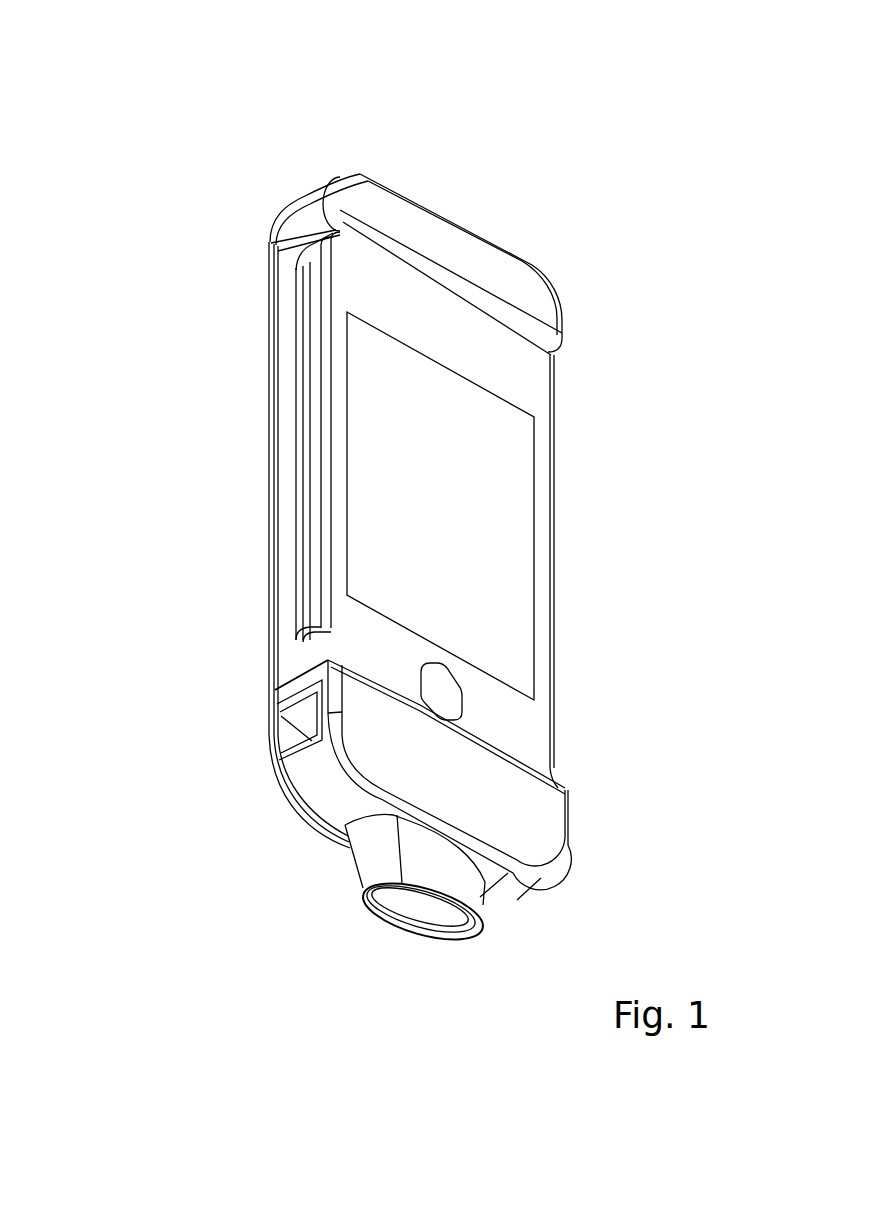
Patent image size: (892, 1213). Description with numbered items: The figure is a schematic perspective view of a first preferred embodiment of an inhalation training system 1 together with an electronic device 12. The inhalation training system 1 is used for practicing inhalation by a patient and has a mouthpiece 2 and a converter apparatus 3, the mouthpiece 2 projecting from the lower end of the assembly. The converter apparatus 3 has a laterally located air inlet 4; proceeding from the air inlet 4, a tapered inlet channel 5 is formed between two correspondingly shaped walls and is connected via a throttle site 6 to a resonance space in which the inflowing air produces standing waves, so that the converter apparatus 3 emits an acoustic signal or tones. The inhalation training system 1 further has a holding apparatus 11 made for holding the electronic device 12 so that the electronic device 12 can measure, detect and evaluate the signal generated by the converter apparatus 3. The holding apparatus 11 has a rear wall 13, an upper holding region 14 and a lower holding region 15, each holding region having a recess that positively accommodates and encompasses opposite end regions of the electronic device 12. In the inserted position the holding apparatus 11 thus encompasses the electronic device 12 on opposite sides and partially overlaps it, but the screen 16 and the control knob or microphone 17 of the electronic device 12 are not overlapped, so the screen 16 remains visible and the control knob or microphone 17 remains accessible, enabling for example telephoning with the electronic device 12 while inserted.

The inhalation training system 1 is at (518, 137).
The mouthpiece 2 is at (400, 905).
The converter apparatus 3 is at (538, 818).
The air inlet 4 is at (272, 731).
The inlet channel 5 is at (300, 700).
The throttle site 6 is at (278, 783).
The holding apparatus 11 is at (258, 452).
The electronic device 12 is at (555, 562).
The rear wall 13 is at (270, 318).
The upper holding region 14 is at (460, 255).
The lower holding region 15 is at (548, 787).
The screen 16 is at (513, 465).
The control knob or microphone 17 is at (452, 690).